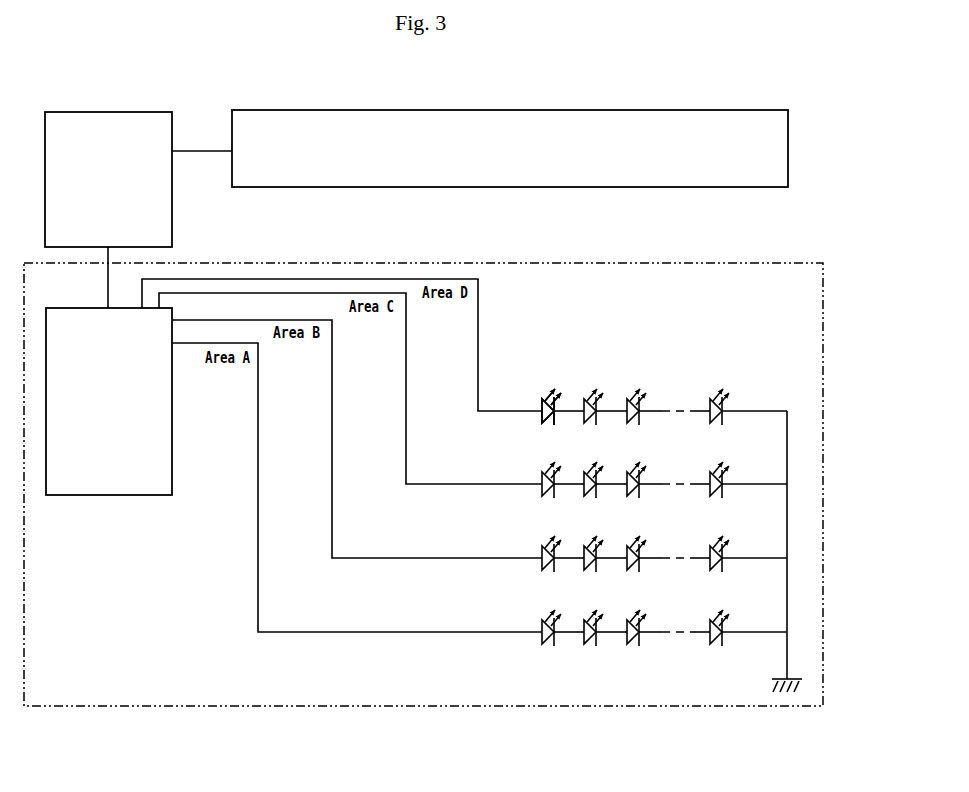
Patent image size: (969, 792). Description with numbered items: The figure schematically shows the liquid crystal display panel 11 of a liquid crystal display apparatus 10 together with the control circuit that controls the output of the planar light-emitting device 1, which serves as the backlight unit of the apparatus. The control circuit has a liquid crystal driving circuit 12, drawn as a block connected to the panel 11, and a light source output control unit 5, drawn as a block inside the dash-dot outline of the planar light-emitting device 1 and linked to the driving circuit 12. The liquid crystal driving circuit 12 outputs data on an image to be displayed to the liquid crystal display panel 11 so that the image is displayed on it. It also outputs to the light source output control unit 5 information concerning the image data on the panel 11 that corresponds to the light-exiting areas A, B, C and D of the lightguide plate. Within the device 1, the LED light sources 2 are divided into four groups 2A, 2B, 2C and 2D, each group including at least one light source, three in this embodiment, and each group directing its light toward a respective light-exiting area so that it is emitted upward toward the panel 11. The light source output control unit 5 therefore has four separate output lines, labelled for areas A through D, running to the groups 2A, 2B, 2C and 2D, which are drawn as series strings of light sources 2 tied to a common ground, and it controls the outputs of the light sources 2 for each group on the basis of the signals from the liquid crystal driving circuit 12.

The planar light-emitting device 1 is at (218, 708).
The LED light source 2 is at (543, 405).
The light source group 2A is at (534, 638).
The light source group 2B is at (534, 564).
The light source group 2C is at (534, 490).
The light source group 2D is at (534, 417).
The light source output control unit 5 is at (103, 495).
The liquid crystal display apparatus 10 is at (796, 142).
The liquid crystal display panel 11 is at (489, 187).
The liquid crystal driving circuit 12 is at (172, 232).